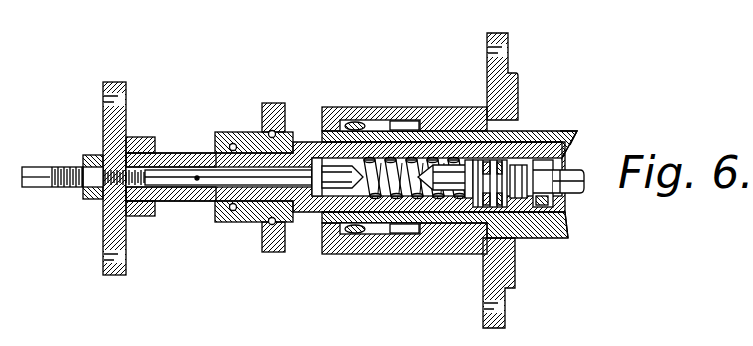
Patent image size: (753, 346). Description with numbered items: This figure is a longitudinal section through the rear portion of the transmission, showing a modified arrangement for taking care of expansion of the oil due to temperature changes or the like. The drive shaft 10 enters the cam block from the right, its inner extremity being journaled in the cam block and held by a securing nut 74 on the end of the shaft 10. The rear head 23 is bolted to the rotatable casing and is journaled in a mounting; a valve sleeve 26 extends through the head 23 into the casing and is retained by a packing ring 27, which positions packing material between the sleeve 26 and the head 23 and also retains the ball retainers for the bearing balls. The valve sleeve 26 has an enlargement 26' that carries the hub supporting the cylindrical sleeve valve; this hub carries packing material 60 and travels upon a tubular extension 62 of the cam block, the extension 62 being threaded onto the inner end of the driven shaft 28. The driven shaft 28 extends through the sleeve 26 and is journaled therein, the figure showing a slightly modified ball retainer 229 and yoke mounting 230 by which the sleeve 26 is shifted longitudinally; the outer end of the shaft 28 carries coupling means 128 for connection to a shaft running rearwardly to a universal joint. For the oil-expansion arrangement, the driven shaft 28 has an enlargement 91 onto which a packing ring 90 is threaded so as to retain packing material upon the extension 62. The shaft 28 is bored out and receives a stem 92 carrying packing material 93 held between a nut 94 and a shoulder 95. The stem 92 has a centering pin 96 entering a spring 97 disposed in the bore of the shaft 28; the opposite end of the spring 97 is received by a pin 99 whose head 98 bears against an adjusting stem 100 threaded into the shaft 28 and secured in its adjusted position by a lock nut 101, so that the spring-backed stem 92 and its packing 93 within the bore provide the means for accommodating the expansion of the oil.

The drive shaft 10 is at (572, 193).
The rear head 23 is at (487, 78).
The valve sleeve 26 is at (345, 136).
The enlargement of the valve sleeve 26' is at (580, 108).
The packing ring 27 is at (328, 107).
The driven shaft 28 is at (165, 153).
The packing material 60 is at (512, 140).
The tubular extension 62 is at (580, 142).
The securing nut 74 is at (553, 185).
The packing ring 90 is at (470, 140).
The enlargement 91 is at (412, 142).
The stem 92 is at (490, 207).
The packing material 93 is at (480, 207).
The nut 94 is at (515, 230).
The shoulder 95 is at (468, 198).
The centering pin 96 is at (430, 190).
The spring 97 is at (378, 198).
The head 98 is at (300, 212).
The pin 99 is at (318, 196).
The adjusting stem 100 is at (35, 173).
The lock nut 101 is at (92, 199).
The coupling means 128 is at (106, 109).
The ball retainer 229 is at (238, 112).
The yoke mounting 230 is at (278, 104).